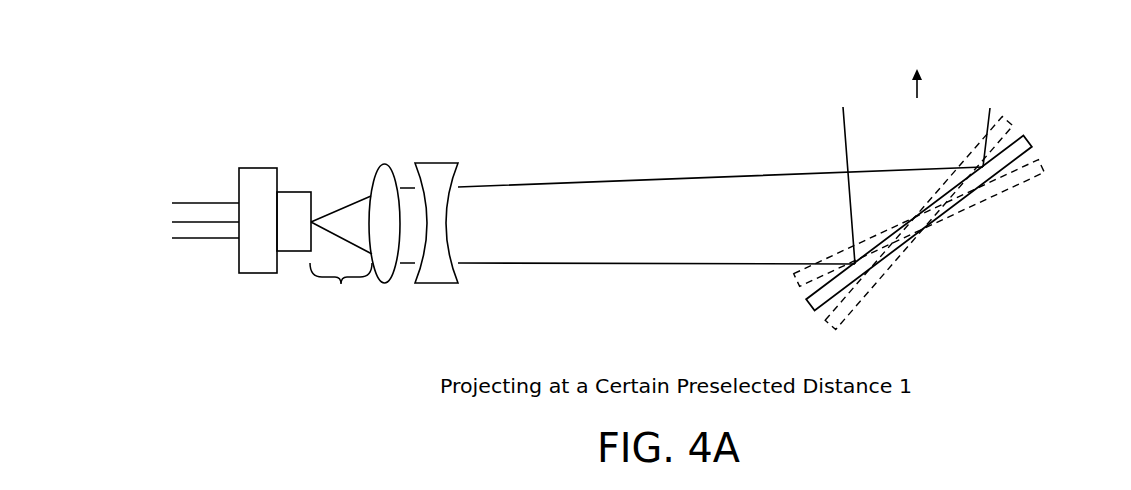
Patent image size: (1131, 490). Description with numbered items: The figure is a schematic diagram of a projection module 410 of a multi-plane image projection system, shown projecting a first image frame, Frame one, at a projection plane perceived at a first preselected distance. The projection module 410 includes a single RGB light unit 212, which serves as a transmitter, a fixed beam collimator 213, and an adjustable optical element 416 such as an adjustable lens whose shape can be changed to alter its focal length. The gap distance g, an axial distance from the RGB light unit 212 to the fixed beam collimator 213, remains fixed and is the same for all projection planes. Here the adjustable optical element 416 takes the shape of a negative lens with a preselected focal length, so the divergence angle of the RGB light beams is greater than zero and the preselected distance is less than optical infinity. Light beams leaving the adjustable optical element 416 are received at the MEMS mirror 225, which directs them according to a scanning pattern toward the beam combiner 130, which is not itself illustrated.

The projection module 410 is at (175, 63).
The RGB light unit 212 is at (258, 166).
The fixed beam collimator 213 is at (387, 283).
The adjustable optical element 416 is at (437, 283).
The MEMS mirror 225 is at (1028, 145).
The beam combiner 130 is at (1028, 52).
The gap distance g is at (341, 283).